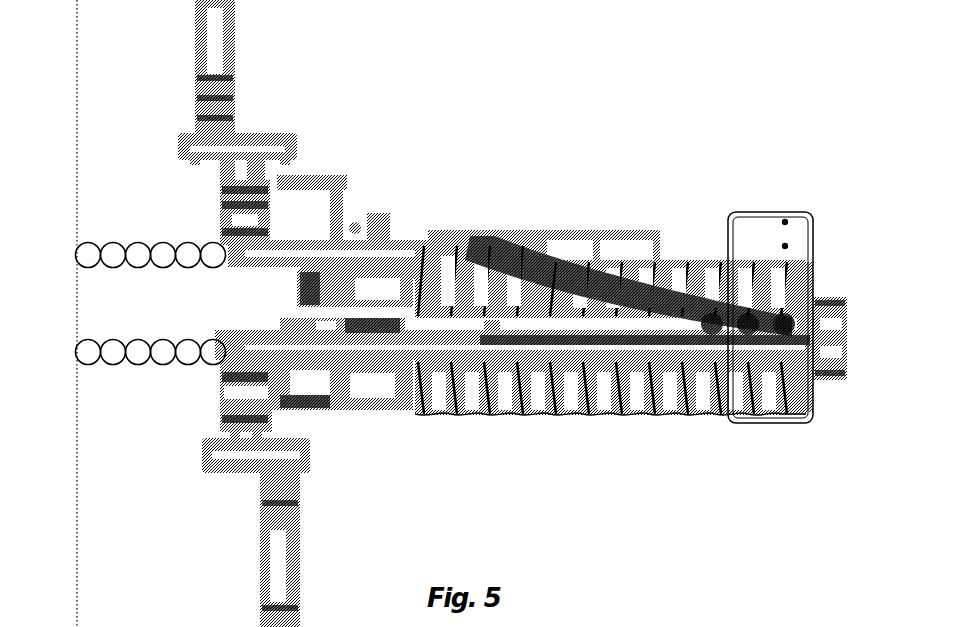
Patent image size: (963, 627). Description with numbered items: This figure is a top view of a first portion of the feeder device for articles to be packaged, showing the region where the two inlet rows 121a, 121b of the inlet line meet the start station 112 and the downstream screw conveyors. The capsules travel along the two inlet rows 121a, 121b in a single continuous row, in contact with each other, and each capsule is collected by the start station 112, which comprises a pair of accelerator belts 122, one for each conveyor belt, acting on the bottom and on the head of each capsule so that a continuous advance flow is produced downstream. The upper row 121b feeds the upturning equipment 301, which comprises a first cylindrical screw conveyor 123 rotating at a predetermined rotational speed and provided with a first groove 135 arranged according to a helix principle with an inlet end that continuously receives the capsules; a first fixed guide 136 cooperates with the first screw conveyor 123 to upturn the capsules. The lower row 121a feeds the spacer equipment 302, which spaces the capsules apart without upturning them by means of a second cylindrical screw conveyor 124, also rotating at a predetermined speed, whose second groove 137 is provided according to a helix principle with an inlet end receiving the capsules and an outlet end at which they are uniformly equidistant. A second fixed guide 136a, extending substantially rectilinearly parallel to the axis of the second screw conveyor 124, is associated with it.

The start station 112 is at (668, 626).
The inlet row 121a is at (192, 352).
The inlet row 121b is at (158, 250).
The accelerator belts 122 is at (300, 250).
The first cylindrical screw conveyor 123 is at (715, 260).
The second cylindrical screw conveyor 124 is at (698, 400).
The first groove 135 is at (473, 283).
The first fixed guide 136 is at (636, 277).
The second fixed guide 136a is at (477, 345).
The second groove 137 is at (580, 397).
The upturning equipment 301 is at (587, 196).
The spacer equipment 302 is at (490, 437).